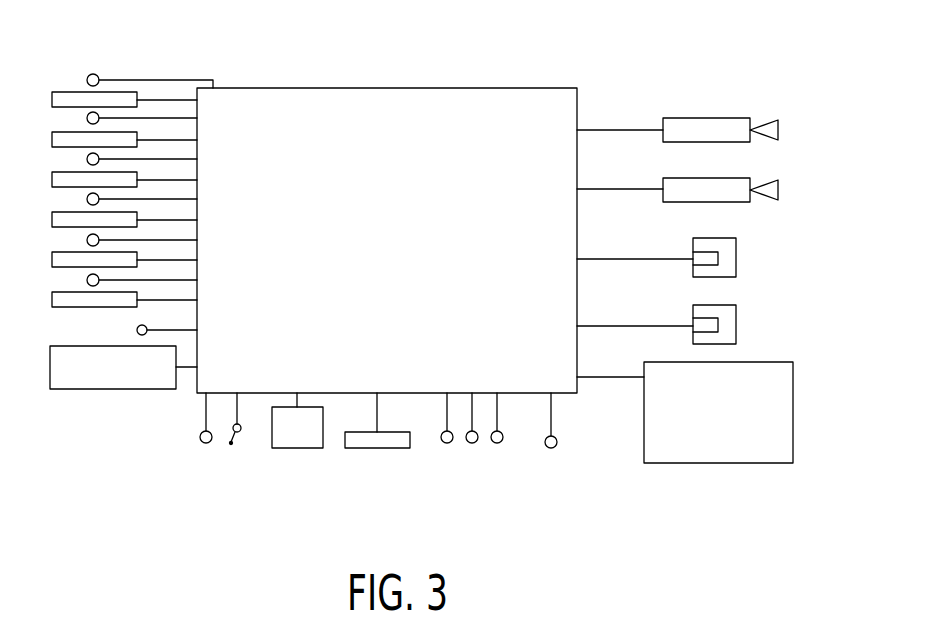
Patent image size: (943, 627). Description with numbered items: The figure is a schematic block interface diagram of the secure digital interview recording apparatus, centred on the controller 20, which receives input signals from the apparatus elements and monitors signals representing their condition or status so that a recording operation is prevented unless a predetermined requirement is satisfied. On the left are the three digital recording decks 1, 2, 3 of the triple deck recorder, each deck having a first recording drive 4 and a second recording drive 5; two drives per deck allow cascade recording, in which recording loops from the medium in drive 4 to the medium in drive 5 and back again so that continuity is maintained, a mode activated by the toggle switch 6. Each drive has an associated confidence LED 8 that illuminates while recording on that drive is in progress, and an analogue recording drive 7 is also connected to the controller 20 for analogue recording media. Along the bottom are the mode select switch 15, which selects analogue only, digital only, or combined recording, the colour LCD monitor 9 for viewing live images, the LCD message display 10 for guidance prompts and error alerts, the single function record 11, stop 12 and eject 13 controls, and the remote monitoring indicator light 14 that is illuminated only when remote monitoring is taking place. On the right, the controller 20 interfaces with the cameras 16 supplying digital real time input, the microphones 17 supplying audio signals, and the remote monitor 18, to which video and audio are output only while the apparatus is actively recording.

The digital recording deck 1 is at (40, 91).
The digital recording deck 2 is at (40, 172).
The digital recording deck 3 is at (40, 251).
The first recording drive 4 is at (128, 92).
The second recording drive 5 is at (137, 136).
The toggle switch 6 is at (239, 432).
The analogue recording drive 7 is at (97, 390).
The confidence LEDs 8 is at (89, 154).
The colour LCD monitor 9 is at (297, 448).
The LCD message display 10 is at (380, 448).
The record control 11 is at (445, 443).
The stop control 12 is at (474, 443).
The eject control 13 is at (499, 443).
The remote monitoring indicator light 14 is at (553, 448).
The mode select switch 15 is at (204, 443).
The camera 16 is at (752, 120).
The microphone 17 is at (736, 322).
The remote monitor 18 is at (780, 362).
The controller 20 is at (458, 88).